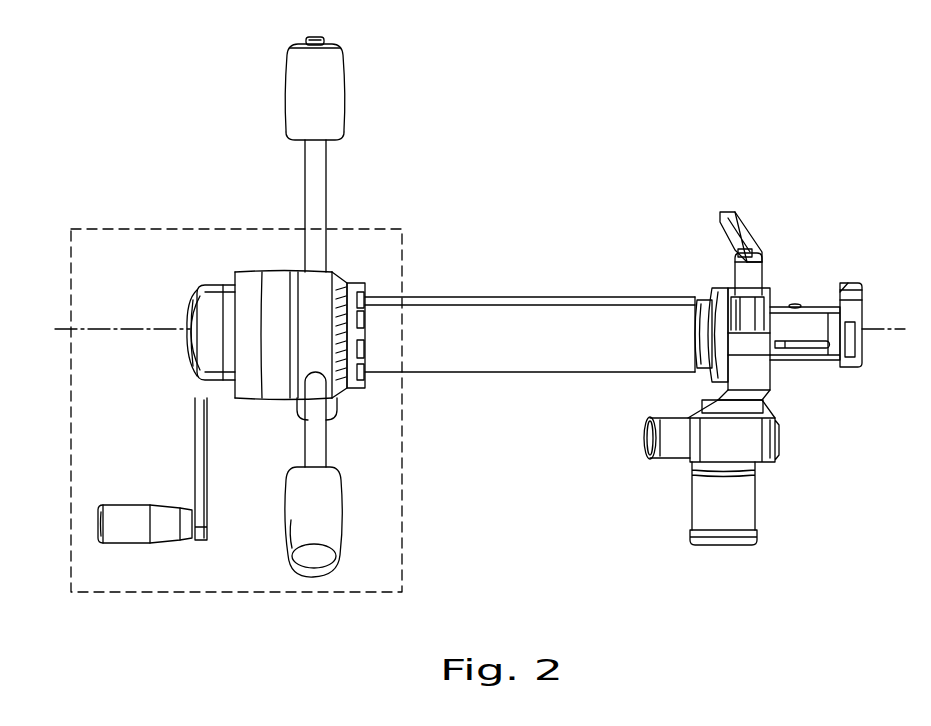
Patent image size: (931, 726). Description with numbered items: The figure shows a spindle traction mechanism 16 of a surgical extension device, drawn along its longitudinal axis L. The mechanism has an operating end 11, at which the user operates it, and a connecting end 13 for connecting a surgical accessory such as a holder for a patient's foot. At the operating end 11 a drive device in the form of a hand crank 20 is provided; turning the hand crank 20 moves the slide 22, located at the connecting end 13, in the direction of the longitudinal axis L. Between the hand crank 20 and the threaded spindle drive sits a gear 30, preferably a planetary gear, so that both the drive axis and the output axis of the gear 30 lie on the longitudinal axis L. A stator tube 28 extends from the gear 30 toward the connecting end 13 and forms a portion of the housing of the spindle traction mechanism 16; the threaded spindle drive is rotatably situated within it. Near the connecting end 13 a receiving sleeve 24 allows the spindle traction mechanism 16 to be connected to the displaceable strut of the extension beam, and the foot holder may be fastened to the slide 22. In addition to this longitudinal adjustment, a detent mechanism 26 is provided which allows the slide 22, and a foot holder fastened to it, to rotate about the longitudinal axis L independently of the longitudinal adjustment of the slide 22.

The operating end 11 is at (227, 564).
The connecting end 13 is at (797, 187).
The spindle traction mechanism 16 is at (441, 211).
The hand crank 20 is at (195, 415).
The slide 22 is at (832, 300).
The receiving sleeve 24 is at (728, 284).
The detent mechanism 26 is at (293, 219).
The stator tube 28 is at (550, 352).
The gear 30 is at (256, 275).
The longitudinal axis L is at (66, 328).